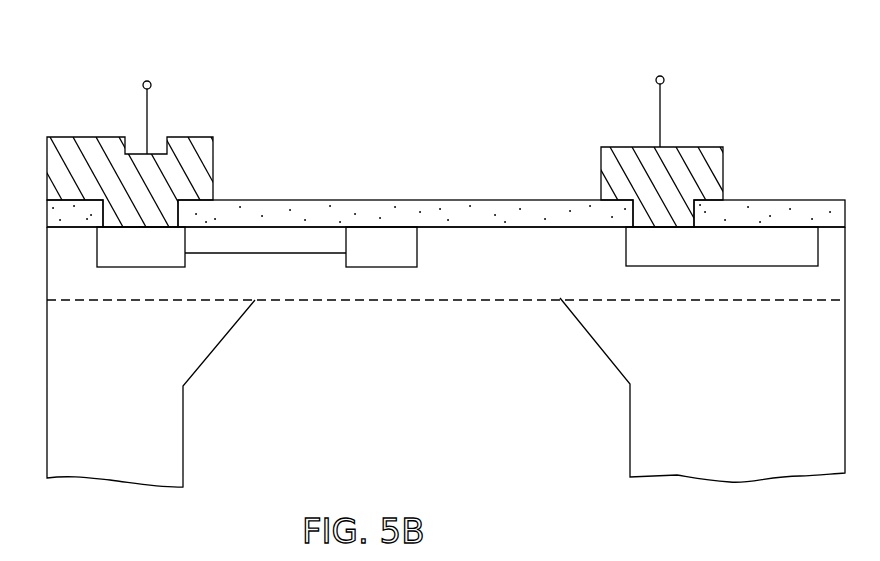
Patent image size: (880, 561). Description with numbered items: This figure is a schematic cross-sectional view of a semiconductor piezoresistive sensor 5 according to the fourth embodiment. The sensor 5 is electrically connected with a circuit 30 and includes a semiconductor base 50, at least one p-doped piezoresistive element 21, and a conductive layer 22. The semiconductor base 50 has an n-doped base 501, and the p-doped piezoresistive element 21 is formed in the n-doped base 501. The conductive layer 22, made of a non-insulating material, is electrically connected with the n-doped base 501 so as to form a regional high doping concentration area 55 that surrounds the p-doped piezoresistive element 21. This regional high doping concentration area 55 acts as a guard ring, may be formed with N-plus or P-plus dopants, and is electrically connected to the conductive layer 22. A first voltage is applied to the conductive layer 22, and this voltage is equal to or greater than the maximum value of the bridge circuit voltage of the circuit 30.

The semiconductor piezoresistive sensor 5 is at (40, 47).
The circuit 30 is at (63, 142).
The conductive layer 22 is at (618, 150).
The regional high doping concentration area 55 is at (683, 248).
The p-doped piezoresistive element 21 is at (285, 253).
The n-doped base 501 is at (475, 258).
The semiconductor base 50 is at (790, 372).